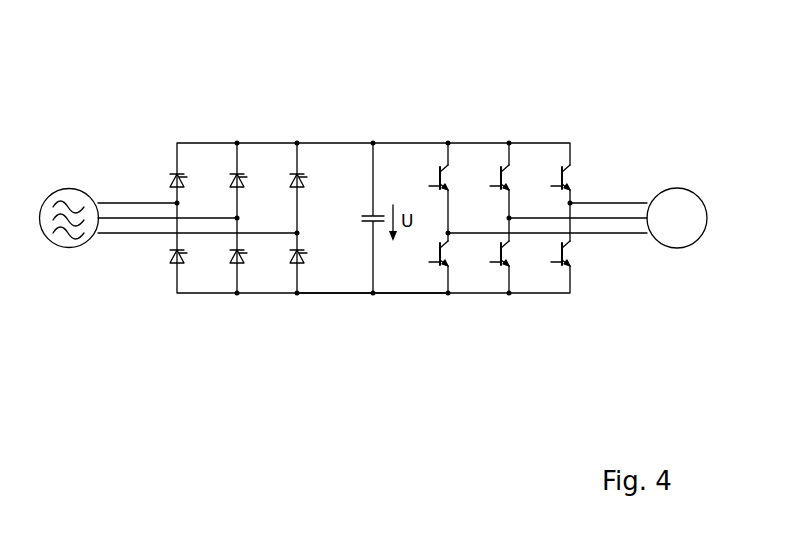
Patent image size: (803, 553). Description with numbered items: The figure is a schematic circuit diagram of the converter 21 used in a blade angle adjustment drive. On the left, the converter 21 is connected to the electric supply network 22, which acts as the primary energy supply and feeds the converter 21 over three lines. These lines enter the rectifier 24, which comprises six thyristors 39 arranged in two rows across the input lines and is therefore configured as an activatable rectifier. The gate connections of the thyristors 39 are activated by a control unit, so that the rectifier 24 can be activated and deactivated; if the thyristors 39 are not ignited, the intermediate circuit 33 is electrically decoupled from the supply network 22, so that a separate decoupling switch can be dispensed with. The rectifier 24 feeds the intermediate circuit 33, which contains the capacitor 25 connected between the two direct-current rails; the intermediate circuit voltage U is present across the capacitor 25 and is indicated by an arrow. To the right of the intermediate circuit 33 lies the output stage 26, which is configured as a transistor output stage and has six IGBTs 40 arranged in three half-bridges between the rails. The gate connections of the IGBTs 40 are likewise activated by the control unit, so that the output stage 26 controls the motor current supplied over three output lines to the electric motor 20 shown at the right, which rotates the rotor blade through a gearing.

The electric motor 20 is at (669, 248).
The converter 21 is at (322, 84).
The electric supply network 22 is at (78, 188).
The rectifier 24 is at (238, 235).
The capacitor 25 is at (366, 222).
The output stage 26 is at (527, 235).
The intermediate circuit 33 is at (343, 295).
The thyristor 39 is at (292, 178).
The IGBT 40 is at (437, 176).